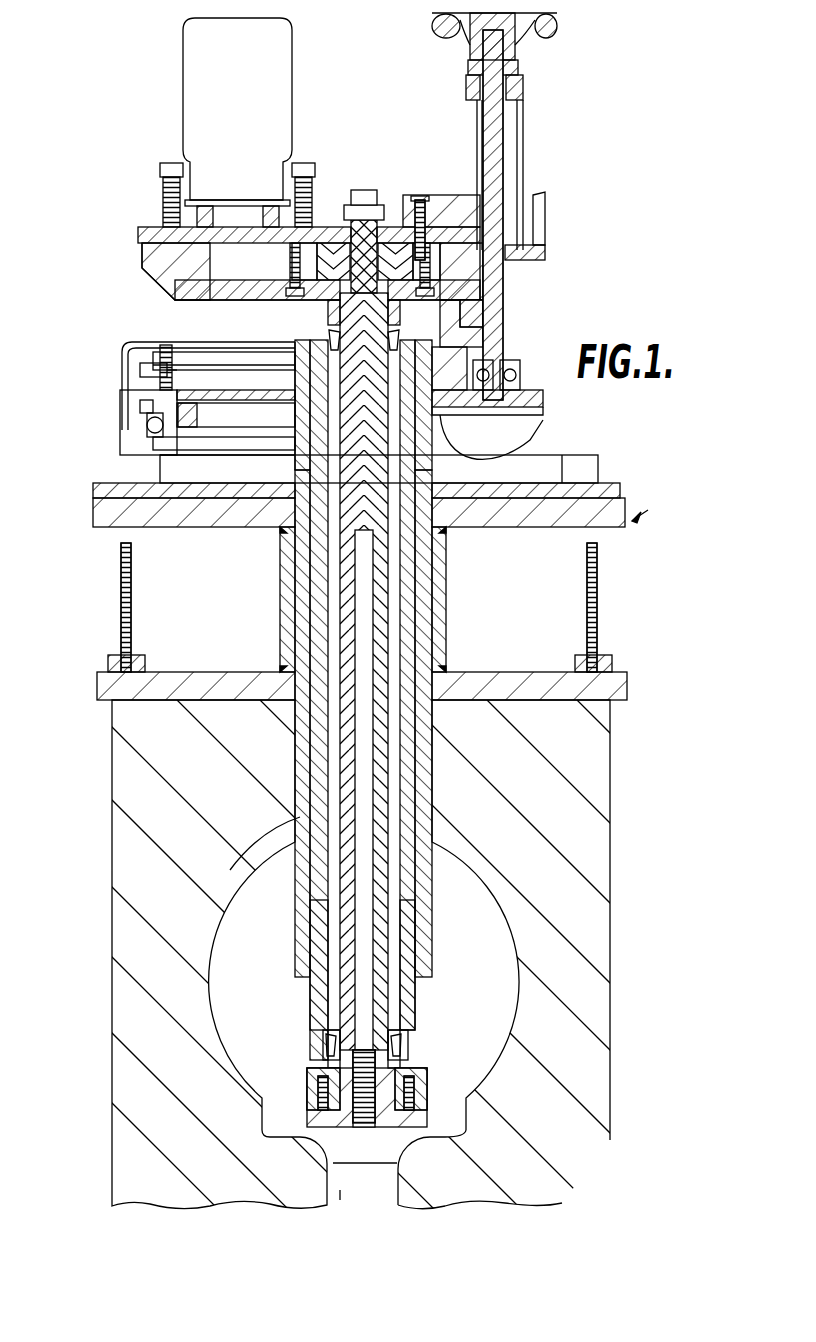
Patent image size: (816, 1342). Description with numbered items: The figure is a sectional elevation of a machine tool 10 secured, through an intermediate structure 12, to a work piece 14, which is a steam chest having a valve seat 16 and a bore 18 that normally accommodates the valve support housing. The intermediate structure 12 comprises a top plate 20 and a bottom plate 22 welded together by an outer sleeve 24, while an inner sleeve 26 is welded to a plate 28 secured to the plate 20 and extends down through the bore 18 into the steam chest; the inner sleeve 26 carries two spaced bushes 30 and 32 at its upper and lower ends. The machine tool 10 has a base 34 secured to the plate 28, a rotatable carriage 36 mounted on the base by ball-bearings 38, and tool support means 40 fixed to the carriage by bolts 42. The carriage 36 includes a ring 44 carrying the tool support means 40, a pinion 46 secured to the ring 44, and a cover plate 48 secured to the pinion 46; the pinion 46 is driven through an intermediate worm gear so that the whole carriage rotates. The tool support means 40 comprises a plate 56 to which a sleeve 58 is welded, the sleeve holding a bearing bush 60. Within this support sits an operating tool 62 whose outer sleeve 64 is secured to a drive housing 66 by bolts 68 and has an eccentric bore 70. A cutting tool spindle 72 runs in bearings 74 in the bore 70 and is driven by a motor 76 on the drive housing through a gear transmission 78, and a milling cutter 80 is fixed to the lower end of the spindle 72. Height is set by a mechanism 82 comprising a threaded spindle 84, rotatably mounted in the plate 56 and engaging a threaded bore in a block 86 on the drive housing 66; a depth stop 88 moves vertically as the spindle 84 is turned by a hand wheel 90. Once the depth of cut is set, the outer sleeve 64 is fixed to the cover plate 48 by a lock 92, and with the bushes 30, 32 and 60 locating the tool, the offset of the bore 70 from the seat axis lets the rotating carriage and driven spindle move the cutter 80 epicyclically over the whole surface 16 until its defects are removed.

The machine tool 10 is at (563, 133).
The intermediate structure 12 is at (652, 507).
The work piece 14 is at (610, 822).
The valve seat 16 is at (320, 1153).
The bore 18 is at (298, 817).
The top plate 20 is at (88, 527).
The bottom plate 22 is at (96, 688).
The outer sleeve 24 is at (281, 626).
The inner sleeve 26 is at (420, 620).
The plate 28 is at (93, 490).
The bush 30 is at (420, 555).
The bush 32 is at (418, 935).
The base 34 is at (598, 462).
The rotatable carriage 36 is at (122, 334).
The ball-bearings 38 is at (150, 425).
The tool support means 40 is at (237, 378).
The bolts 42 is at (190, 397).
The ring 44 is at (157, 395).
The pinion 46 is at (140, 370).
The cover plate 48 is at (122, 348).
The plate 56 is at (267, 393).
The sleeve 58 is at (300, 415).
The bearing bush 60 is at (300, 418).
The operating tool 62 is at (322, 90).
The outer sleeve 64 is at (311, 1006).
The drive housing 66 is at (142, 238).
The bolts 68 is at (440, 355).
The eccentric bore 70 is at (397, 1008).
The cutting tool spindle 72 is at (390, 985).
The bearings 74 is at (333, 345).
The motor 76 is at (190, 52).
The gear transmission 78 is at (322, 258).
The milling cutter 80 is at (347, 1168).
The height adjustment mechanism 82 is at (584, 80).
The threaded spindle 84 is at (508, 168).
The block 86 is at (447, 196).
The depth stop 88 is at (545, 218).
The hand wheel 90 is at (553, 32).
The lock 92 is at (522, 448).